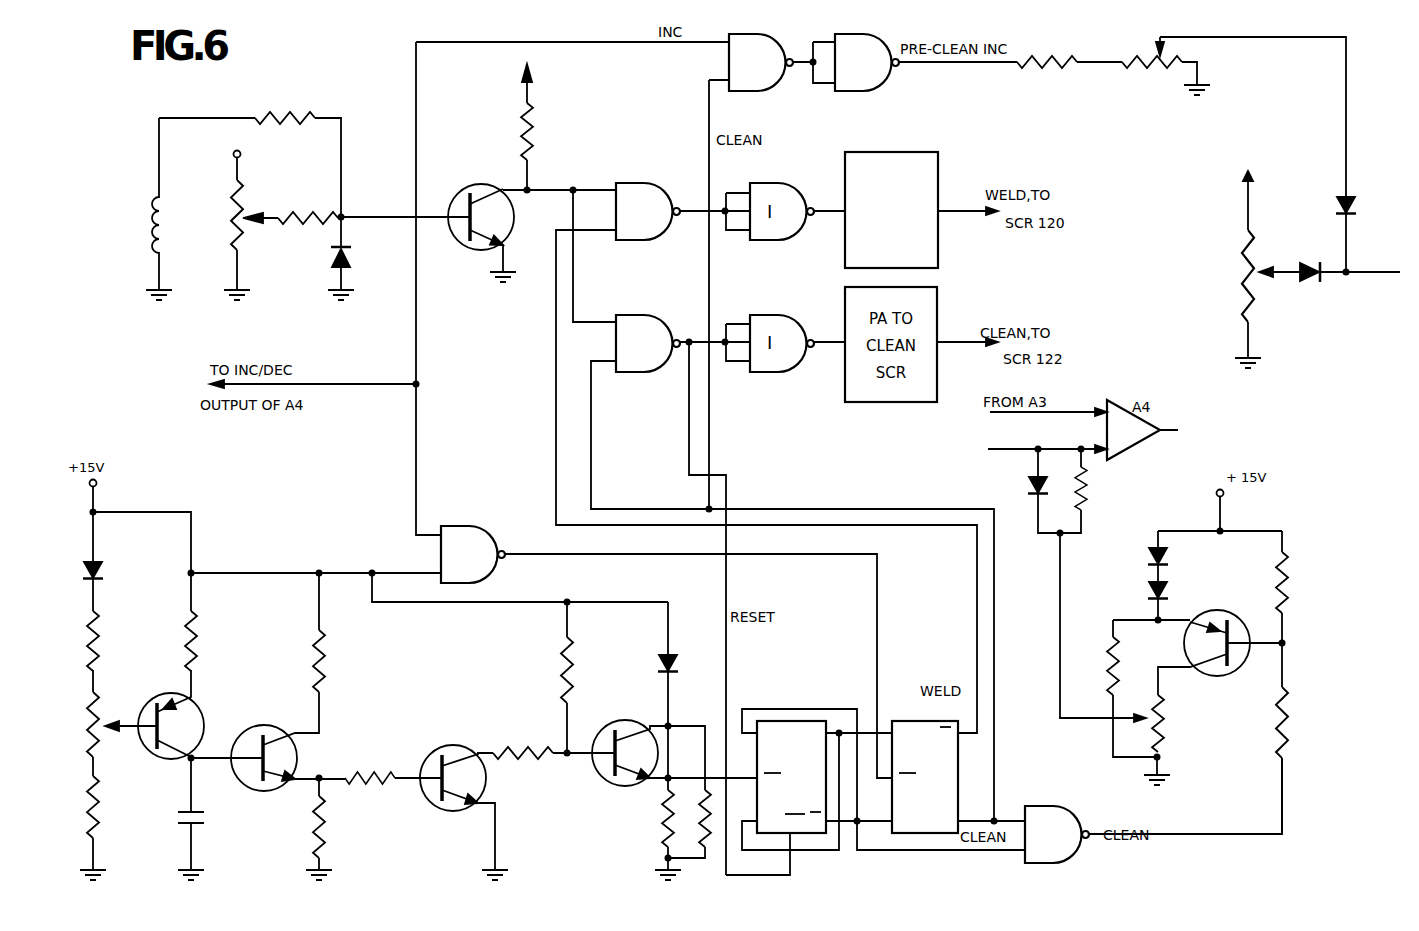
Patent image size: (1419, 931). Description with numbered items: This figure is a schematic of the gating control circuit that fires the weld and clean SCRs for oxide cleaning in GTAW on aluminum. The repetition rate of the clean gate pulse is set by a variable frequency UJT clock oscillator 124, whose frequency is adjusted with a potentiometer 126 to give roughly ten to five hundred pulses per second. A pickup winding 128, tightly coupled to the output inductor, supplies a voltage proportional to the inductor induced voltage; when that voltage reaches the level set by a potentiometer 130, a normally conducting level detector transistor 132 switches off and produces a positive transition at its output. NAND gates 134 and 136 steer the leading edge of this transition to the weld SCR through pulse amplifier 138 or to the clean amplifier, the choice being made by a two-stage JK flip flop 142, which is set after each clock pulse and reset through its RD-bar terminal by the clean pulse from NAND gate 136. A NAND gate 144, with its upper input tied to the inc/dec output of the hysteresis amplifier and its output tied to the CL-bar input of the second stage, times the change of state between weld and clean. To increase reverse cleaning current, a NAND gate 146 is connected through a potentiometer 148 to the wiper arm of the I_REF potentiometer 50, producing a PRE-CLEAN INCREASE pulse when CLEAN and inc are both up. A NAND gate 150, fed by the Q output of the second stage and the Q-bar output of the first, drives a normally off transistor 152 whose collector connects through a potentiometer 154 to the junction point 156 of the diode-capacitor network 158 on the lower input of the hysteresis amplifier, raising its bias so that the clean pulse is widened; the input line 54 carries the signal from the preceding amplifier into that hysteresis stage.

The I_REF potentiometer 50 is at (1258, 286).
The input line from A3 54 is at (1031, 433).
The variable frequency UJT clock oscillator 124 is at (261, 835).
The potentiometer 126 is at (104, 736).
The pickup winding 128 is at (143, 228).
The potentiometer 130 is at (246, 230).
The transistor 132 is at (490, 185).
The NAND gate 134 is at (656, 193).
The NAND gate 136 is at (656, 325).
The pulse amplifier 138 is at (886, 152).
The two-stage JK flip flop 142 is at (913, 865).
The NAND gate 144 is at (497, 526).
The NAND gate 146 is at (771, 76).
The potentiometer 148 is at (1152, 75).
The NAND gate 150 is at (1082, 810).
The normally off transistor 152 is at (1244, 618).
The potentiometer 154 is at (1170, 720).
The junction point 156 is at (1093, 487).
The diode-capacitor network 158 is at (1029, 488).